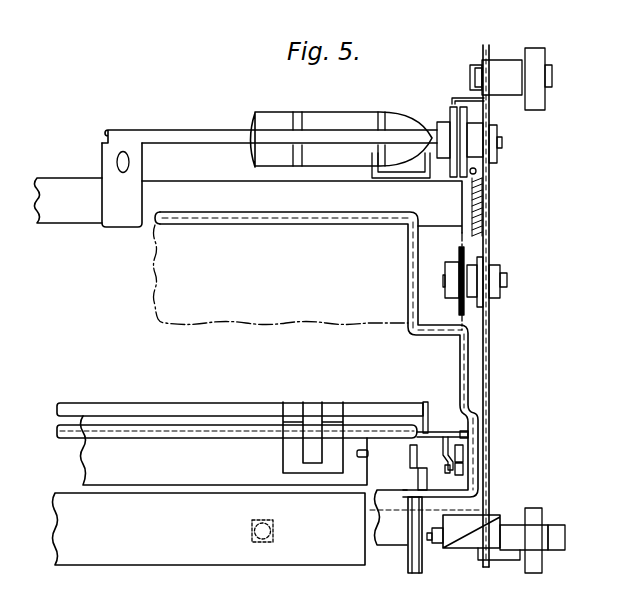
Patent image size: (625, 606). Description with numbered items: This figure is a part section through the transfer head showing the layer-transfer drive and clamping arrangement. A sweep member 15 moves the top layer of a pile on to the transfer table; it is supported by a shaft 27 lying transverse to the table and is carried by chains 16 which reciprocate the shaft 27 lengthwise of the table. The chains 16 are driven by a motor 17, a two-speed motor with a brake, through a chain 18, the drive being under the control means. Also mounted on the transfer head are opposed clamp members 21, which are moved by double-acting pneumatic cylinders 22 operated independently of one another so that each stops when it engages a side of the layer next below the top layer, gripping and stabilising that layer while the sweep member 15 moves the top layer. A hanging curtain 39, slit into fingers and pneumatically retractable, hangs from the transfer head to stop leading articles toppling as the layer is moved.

The sweep member 15 is at (365, 467).
The chains 16 is at (467, 200).
The motor 17 is at (355, 118).
The chain 18 is at (468, 105).
The clamp members 21 is at (398, 568).
The pneumatic cylinders 22 is at (500, 532).
The shaft 27 is at (153, 408).
The hanging curtain 39 is at (168, 297).